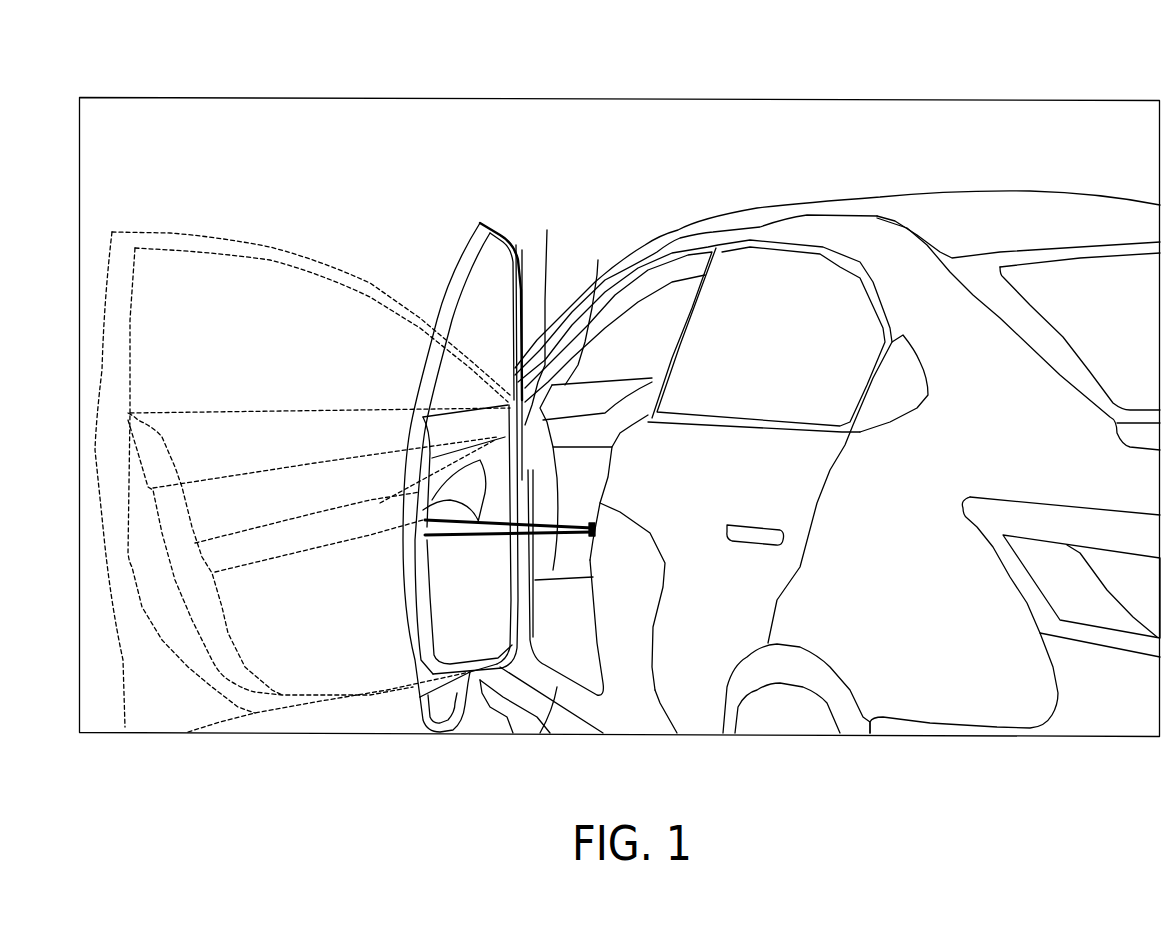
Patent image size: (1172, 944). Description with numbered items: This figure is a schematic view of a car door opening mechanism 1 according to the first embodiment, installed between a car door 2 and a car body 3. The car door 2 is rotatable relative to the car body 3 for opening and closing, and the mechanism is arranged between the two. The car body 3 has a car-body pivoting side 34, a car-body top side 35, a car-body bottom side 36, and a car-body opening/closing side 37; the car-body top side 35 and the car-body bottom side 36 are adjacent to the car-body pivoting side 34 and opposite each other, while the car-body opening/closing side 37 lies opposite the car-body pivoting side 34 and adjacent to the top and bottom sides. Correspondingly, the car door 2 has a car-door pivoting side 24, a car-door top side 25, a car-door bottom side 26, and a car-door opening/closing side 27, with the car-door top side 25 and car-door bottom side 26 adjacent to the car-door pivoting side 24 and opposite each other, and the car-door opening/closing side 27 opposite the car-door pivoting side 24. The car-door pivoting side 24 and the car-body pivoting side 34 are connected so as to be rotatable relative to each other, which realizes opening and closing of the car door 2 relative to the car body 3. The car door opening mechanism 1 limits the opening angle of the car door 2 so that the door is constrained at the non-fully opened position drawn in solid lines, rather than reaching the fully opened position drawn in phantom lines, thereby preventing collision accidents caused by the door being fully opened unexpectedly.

The car door opening mechanism 1 is at (495, 533).
The car door 2 is at (220, 243).
The car body 3 is at (808, 223).
The car-door pivoting side 24 is at (547, 230).
The car-door top side 25 is at (508, 240).
The car-door bottom side 26 is at (468, 683).
The car-door opening/closing side 27 is at (427, 527).
The car-body pivoting side 34 is at (598, 260).
The car-body top side 35 is at (692, 243).
The car-body bottom side 36 is at (560, 687).
The car-body opening/closing side 37 is at (655, 690).